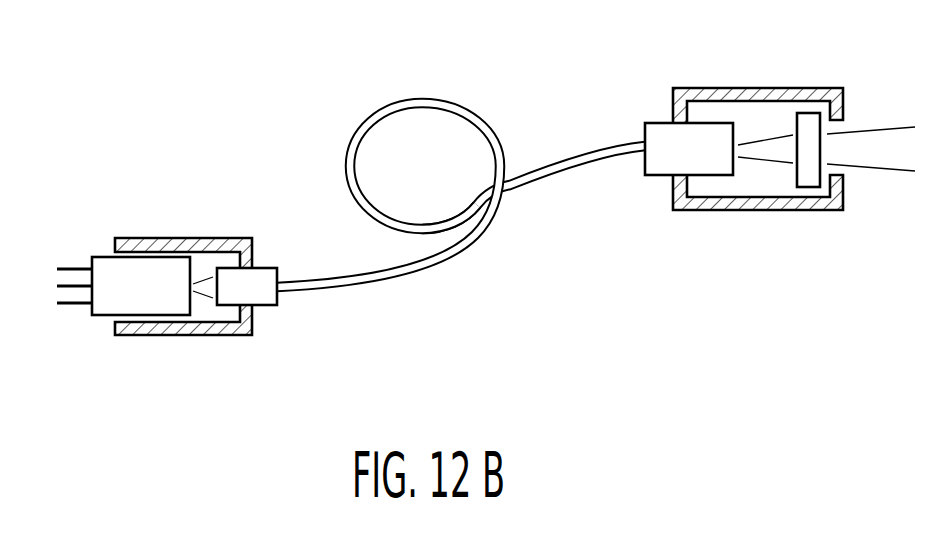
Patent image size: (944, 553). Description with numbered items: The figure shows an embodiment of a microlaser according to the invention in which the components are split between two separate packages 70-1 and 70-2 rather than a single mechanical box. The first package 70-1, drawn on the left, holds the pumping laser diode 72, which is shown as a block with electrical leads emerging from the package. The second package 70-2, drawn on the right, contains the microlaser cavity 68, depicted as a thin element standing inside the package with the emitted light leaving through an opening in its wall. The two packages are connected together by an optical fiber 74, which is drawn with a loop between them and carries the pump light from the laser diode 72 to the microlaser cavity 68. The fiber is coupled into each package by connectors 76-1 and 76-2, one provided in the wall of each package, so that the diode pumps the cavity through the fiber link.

The microlaser cavity 68 is at (810, 120).
The first package 70-1 is at (206, 240).
The second package 70-2 is at (707, 92).
The pumping laser diode 72 is at (101, 268).
The optical fiber 74 is at (450, 263).
The first connector 76-1 is at (266, 305).
The second connector 76-2 is at (658, 130).